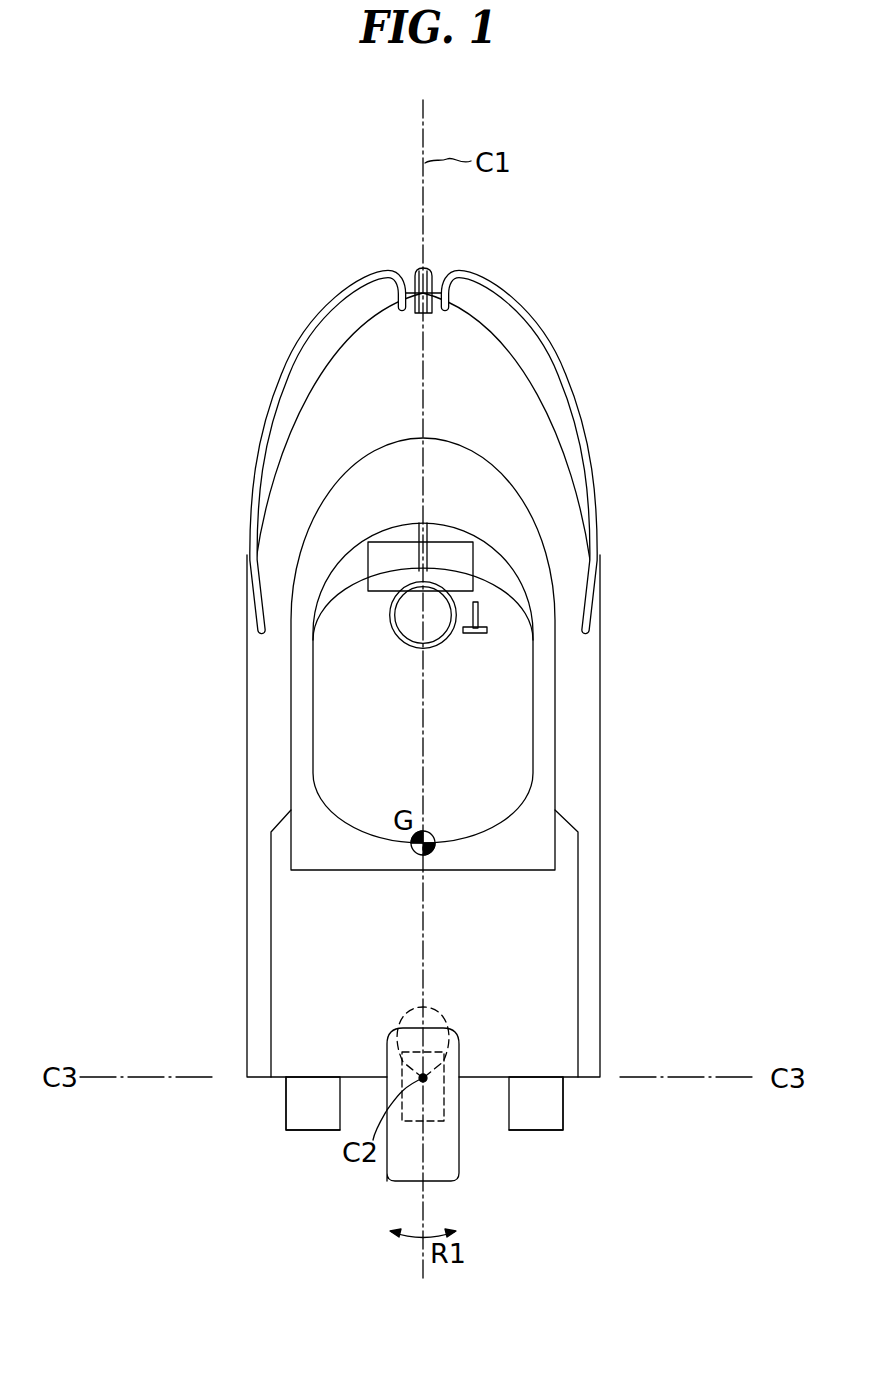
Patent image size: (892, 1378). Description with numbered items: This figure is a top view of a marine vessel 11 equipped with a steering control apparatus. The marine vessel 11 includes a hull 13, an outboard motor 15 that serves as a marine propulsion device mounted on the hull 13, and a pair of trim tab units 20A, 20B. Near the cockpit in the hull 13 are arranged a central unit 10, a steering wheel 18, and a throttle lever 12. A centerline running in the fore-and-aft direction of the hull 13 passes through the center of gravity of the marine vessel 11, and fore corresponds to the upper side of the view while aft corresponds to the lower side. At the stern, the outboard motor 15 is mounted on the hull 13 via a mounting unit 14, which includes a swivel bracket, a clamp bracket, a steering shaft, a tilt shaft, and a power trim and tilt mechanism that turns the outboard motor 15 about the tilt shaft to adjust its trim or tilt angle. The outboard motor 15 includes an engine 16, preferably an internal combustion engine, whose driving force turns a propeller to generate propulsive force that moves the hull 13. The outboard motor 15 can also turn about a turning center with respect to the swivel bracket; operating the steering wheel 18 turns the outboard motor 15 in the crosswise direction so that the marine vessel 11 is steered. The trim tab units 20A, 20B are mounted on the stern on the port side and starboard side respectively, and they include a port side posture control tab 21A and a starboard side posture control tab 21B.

The central unit 10 is at (473, 560).
The marine vessel 11 is at (273, 333).
The throttle lever 12 is at (478, 636).
The hull 13 is at (232, 787).
The mounting unit 14 is at (443, 1016).
The outboard motor 15 is at (447, 1182).
The engine 16 is at (432, 1122).
The steering wheel 18 is at (402, 642).
The trim tab unit 20A is at (296, 1135).
The trim tab unit 20B is at (552, 1135).
The tab 21A is at (288, 1107).
The tab 21B is at (561, 1107).